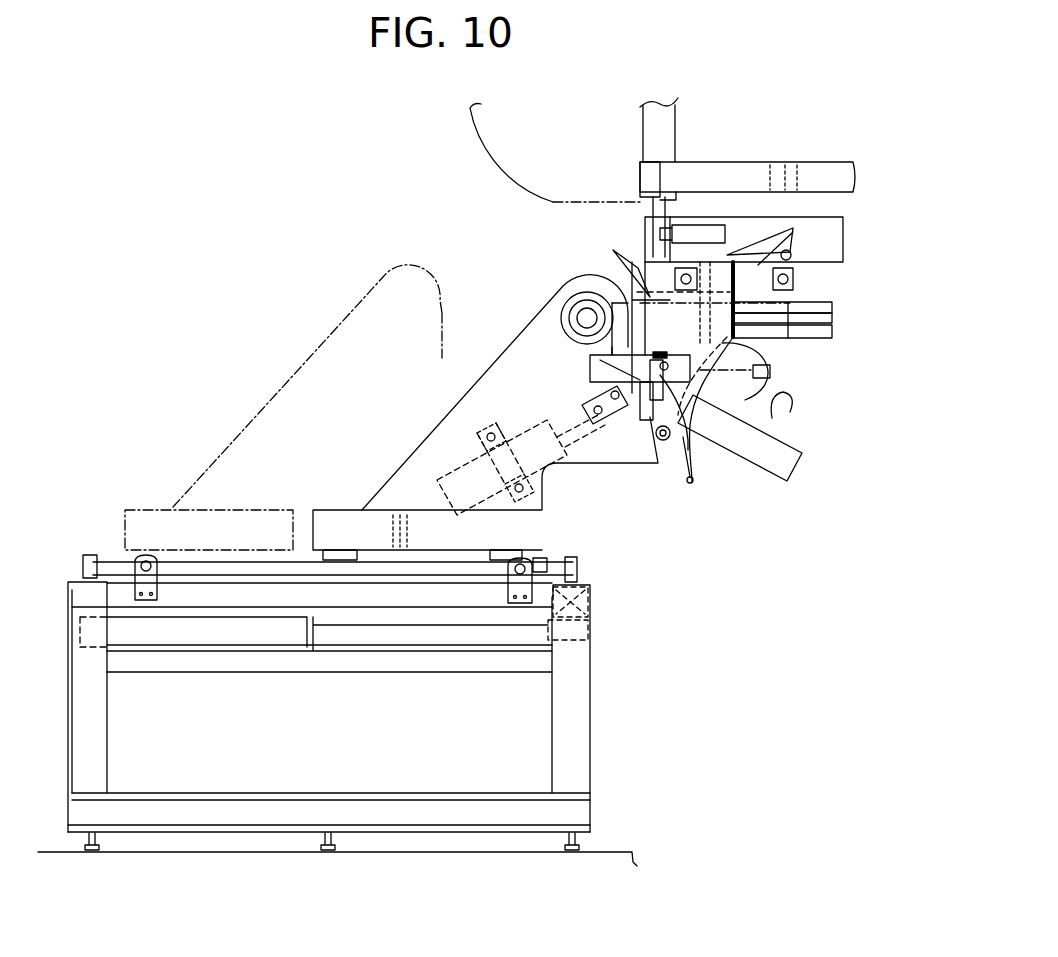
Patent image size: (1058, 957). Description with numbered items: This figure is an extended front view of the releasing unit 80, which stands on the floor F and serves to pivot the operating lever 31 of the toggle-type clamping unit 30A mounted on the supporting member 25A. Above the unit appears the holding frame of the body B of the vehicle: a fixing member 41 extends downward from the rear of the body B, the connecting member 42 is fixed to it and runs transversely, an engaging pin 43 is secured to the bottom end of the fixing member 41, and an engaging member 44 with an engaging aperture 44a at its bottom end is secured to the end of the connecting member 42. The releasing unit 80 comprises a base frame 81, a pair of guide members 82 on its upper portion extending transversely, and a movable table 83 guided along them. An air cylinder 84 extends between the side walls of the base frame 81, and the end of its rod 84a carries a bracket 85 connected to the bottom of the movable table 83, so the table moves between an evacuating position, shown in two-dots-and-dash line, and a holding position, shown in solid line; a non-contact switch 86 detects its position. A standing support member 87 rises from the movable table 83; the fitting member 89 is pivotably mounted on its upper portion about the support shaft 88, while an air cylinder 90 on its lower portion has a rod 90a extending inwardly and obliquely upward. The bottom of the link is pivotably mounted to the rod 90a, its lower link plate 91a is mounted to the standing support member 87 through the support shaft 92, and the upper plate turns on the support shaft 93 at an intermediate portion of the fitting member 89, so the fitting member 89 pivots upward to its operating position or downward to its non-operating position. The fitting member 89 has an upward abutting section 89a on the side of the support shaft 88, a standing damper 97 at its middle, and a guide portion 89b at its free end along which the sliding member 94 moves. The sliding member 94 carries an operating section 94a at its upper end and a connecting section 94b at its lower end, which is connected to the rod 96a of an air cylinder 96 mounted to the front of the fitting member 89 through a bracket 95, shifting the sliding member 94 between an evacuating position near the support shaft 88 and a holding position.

The fixing member 41 is at (677, 130).
The connecting member 42 is at (803, 162).
The clamping unit 30A is at (720, 218).
The engaging member 44 is at (660, 178).
The engaging pin 43 is at (670, 205).
The supporting member 25A is at (843, 218).
The engaging aperture 44a is at (650, 225).
The operating lever 31 is at (760, 248).
The operating section 94a is at (792, 255).
The abutting section 89a is at (603, 264).
The standing support member 87 is at (495, 353).
The support shaft 88 is at (578, 310).
The standing damper 97 is at (715, 277).
The sliding member 94 is at (790, 303).
The fitting member 89 is at (833, 315).
The guide portion 89b is at (833, 335).
The connecting section 94b is at (770, 368).
The support shaft 93 is at (580, 358).
The air cylinder 90 is at (520, 428).
The air cylinder 96 is at (590, 402).
The rod 90a is at (600, 437).
The bracket 95 is at (700, 387).
The rod 96a is at (688, 440).
The support shaft 92 is at (661, 443).
The lower link plate 91a is at (730, 477).
The releasing unit 80 is at (335, 282).
The body of the vehicle B is at (488, 160).
The movable table 83 is at (320, 509).
The non-contact switch 86 is at (147, 580).
The guide member 82 is at (105, 557).
The bracket 85 is at (586, 595).
The rod 84a is at (575, 640).
The air cylinder 84 is at (243, 640).
The base frame 81 is at (603, 733).
The floor F is at (621, 850).